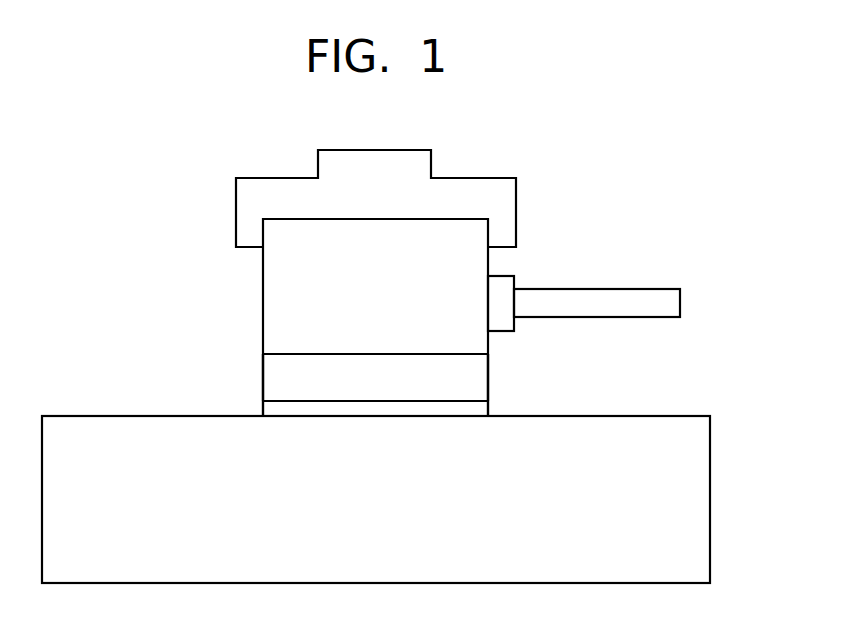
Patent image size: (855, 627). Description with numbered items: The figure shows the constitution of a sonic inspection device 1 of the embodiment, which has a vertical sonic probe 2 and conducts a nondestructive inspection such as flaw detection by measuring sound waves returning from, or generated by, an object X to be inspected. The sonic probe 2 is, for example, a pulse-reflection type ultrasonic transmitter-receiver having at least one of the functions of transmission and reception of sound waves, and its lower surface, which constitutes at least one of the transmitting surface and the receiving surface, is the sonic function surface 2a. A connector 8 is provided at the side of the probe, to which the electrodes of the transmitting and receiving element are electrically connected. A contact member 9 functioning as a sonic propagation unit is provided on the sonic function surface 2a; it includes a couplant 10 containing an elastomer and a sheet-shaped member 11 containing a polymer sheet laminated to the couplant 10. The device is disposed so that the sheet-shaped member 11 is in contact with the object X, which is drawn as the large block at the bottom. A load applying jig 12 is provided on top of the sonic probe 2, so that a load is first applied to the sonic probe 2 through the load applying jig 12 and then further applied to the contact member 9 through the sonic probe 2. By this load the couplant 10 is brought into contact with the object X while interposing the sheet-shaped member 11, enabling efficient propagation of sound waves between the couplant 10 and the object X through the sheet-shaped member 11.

The sonic inspection device 1 is at (578, 189).
The sonic probe 2 is at (490, 262).
The sonic function surface 2a is at (448, 355).
The connector 8 is at (515, 323).
The contact member 9 is at (205, 351).
The couplant 10 is at (262, 360).
The sheet-shaped member 11 is at (262, 404).
The load applying jig 12 is at (236, 207).
The object to be inspected X is at (711, 481).